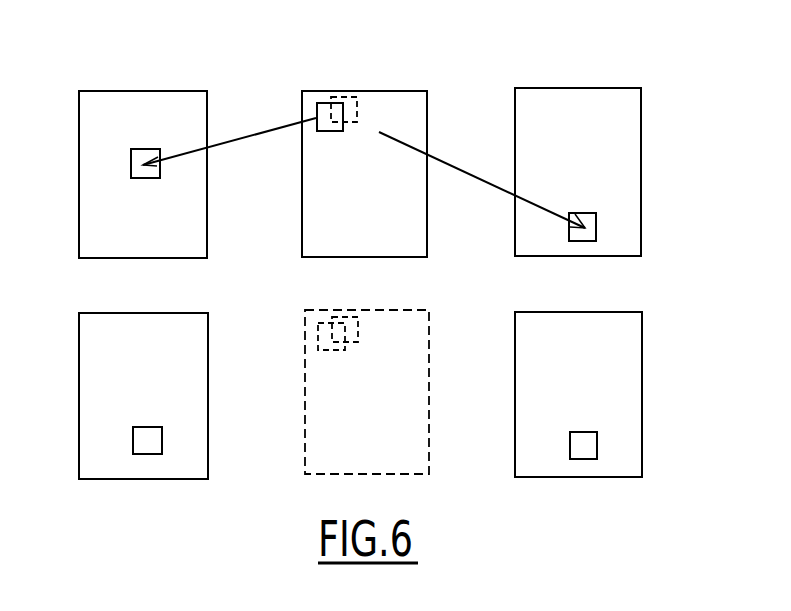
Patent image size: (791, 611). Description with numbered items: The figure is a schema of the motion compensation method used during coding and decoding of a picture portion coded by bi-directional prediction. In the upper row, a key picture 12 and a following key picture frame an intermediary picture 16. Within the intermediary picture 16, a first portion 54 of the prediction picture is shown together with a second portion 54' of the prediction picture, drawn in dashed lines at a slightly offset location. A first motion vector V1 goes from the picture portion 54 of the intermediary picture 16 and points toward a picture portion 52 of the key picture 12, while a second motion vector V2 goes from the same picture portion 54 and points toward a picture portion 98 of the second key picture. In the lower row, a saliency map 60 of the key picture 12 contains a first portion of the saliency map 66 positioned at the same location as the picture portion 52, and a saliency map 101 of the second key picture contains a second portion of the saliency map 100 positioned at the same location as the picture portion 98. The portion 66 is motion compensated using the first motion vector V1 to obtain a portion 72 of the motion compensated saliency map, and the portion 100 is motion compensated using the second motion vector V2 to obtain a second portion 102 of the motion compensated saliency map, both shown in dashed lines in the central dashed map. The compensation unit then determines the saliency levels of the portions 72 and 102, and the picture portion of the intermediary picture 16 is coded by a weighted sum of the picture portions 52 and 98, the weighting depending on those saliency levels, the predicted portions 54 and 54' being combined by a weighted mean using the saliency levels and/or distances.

The key picture 12 is at (92, 89).
The intermediary picture 16 is at (406, 90).
The picture portion 52 is at (131, 160).
The picture portion 54 is at (315, 83).
The second portion of the prediction picture 54' is at (364, 79).
The first motion vector V1 is at (229, 138).
The second motion vector V2 is at (482, 180).
The picture portion 98 is at (596, 222).
The saliency map 60 is at (98, 482).
The first portion of the saliency map 66 is at (133, 435).
The portion of the motion compensated saliency map 72 is at (318, 332).
The second portion of the motion compensated saliency map 102 is at (353, 320).
The saliency map 101 is at (642, 392).
The second portion of the saliency map 100 is at (597, 445).